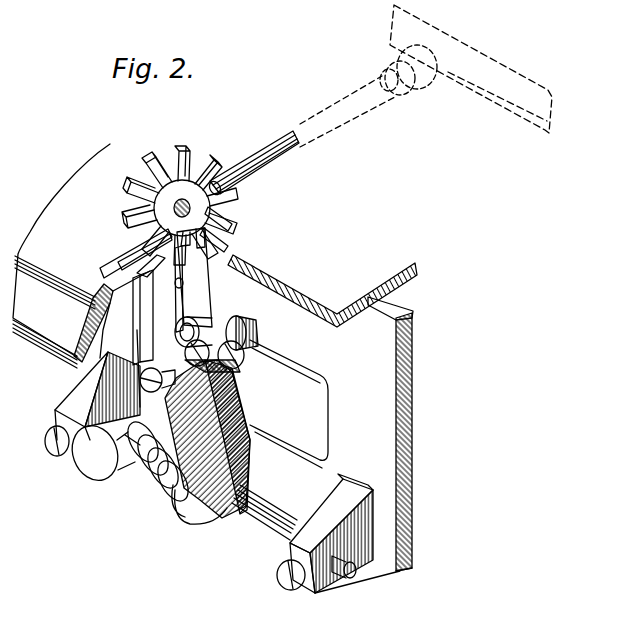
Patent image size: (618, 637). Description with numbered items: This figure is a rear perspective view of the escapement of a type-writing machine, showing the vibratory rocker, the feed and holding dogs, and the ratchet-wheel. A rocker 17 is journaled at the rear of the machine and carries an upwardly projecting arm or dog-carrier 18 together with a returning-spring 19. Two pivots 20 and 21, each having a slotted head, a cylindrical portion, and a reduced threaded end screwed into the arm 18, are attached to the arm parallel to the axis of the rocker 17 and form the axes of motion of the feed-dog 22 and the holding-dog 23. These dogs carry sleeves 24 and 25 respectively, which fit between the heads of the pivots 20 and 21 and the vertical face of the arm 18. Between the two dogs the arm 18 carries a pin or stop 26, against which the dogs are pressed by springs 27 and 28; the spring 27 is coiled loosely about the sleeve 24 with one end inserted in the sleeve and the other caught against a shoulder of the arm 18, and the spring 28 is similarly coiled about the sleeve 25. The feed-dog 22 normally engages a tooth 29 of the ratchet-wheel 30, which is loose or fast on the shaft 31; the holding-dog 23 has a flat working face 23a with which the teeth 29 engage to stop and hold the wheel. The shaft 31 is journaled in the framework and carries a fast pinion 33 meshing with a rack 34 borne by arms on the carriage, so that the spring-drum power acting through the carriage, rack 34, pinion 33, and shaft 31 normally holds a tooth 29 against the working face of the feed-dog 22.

The rocker 17 is at (252, 528).
The arm or dog-carrier 18 is at (147, 259).
The returning-spring 19 is at (190, 522).
The pivot 20 is at (240, 353).
The pivot 21 is at (230, 386).
The feed-dog 22 is at (200, 258).
The holding-dog 23 is at (152, 284).
The flat working face 23a is at (125, 258).
The sleeve 24 is at (241, 322).
The sleeve 25 is at (193, 320).
The pin or stop 26 is at (173, 291).
The spring 27 is at (213, 321).
The spring 28 is at (150, 340).
The tooth 29 is at (229, 219).
The ratchet-wheel 30 is at (180, 205).
The shaft 31 is at (261, 157).
The pinion 33 is at (433, 88).
The rack 34 is at (492, 106).